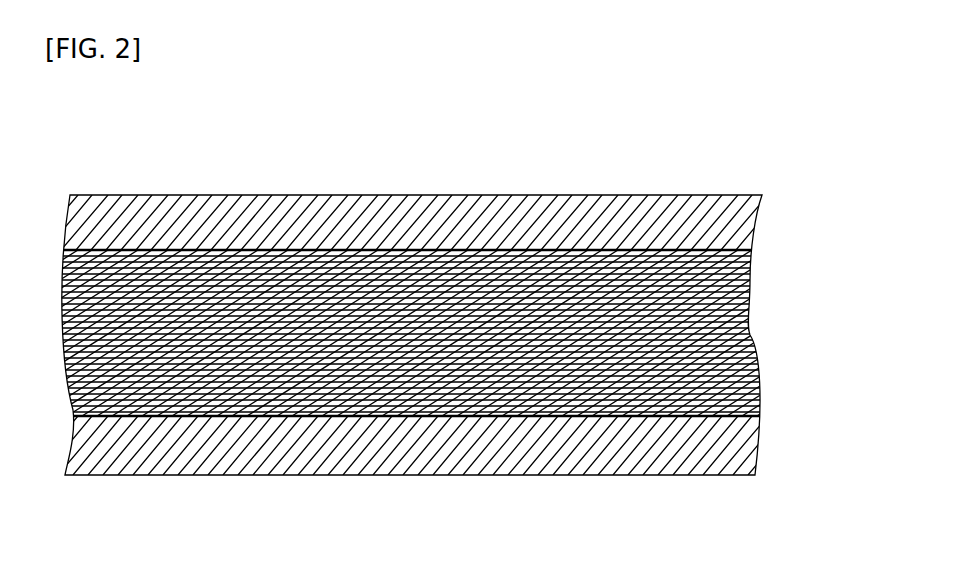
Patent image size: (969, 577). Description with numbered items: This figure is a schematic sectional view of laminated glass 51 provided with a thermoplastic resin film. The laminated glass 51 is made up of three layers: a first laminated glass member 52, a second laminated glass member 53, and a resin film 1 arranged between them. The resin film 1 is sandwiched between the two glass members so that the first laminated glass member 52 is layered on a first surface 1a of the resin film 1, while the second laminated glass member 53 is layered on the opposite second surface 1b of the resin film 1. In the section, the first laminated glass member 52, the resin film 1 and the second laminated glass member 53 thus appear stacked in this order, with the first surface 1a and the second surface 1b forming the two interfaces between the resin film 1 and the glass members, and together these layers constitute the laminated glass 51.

The laminated glass 51 is at (148, 147).
The first laminated glass member 52 is at (265, 195).
The second laminated glass member 53 is at (262, 475).
The resin film 1 is at (752, 333).
The first surface 1a is at (583, 253).
The second surface 1b is at (577, 416).